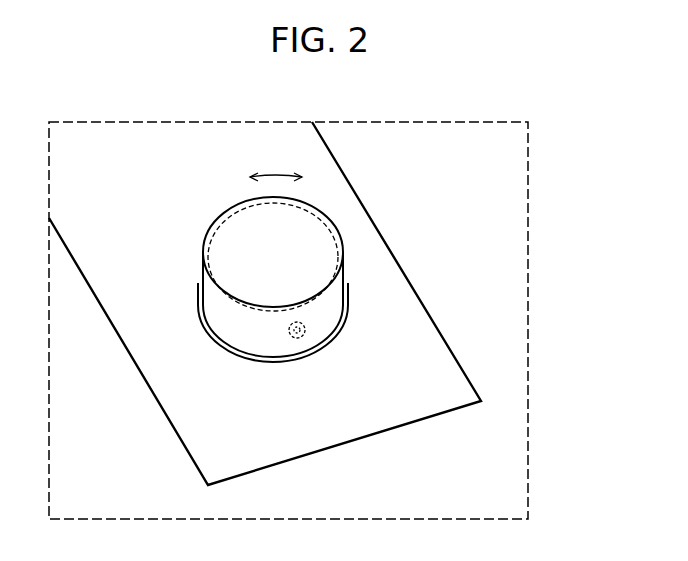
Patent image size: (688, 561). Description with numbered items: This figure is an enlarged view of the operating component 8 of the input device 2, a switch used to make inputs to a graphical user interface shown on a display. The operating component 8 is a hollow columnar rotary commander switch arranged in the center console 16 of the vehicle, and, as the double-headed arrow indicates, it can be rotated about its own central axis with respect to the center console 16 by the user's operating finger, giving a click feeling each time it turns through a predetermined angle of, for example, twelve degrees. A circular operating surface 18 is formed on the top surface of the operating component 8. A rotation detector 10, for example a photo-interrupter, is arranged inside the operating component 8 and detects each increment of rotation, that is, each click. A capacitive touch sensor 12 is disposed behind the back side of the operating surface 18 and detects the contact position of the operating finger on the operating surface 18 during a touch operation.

The input device 2 is at (373, 182).
The operating component 8 is at (347, 297).
The rotation detector 10 is at (306, 336).
The touch sensor 12 is at (222, 301).
The center console 16 is at (502, 333).
The operating surface 18 is at (245, 222).